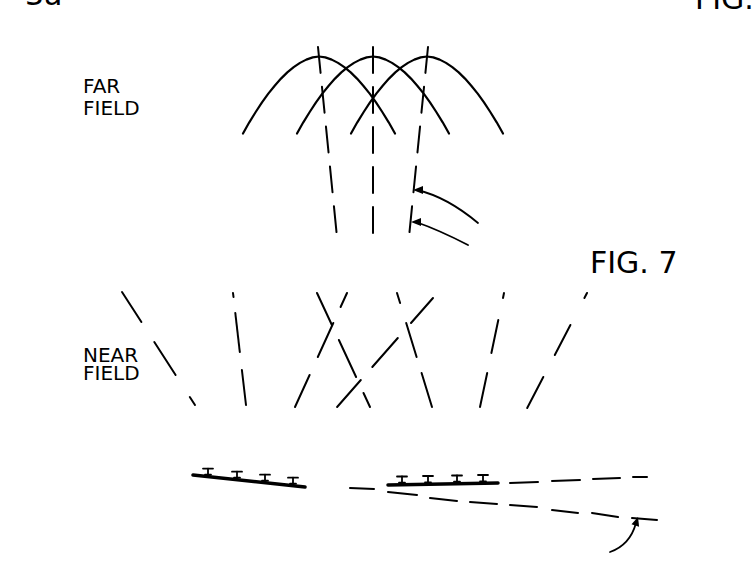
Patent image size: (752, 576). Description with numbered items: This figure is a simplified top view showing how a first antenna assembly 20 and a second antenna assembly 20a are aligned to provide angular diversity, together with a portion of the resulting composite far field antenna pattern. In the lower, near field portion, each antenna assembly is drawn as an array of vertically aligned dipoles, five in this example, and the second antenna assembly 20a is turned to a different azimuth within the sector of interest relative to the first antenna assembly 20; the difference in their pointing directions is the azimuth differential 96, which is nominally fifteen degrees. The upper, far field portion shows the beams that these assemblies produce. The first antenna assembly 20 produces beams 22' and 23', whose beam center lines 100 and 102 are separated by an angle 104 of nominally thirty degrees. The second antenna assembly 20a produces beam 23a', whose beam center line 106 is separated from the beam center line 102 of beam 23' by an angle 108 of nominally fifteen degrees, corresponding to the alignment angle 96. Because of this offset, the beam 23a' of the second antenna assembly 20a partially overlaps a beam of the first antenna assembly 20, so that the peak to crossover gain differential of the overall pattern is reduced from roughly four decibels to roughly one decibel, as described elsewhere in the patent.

The first antenna assembly 20 is at (230, 480).
The second antenna assembly 20a is at (408, 487).
The beam 22' is at (311, 92).
The beam 23' is at (442, 95).
The beam 23a' is at (375, 71).
The azimuth differential 96 is at (635, 470).
The beam center line 100 is at (318, 47).
The beam center line 102 is at (430, 50).
The angle 104 is at (326, 188).
The beam center line 106 is at (373, 46).
The angle 108 is at (368, 218).